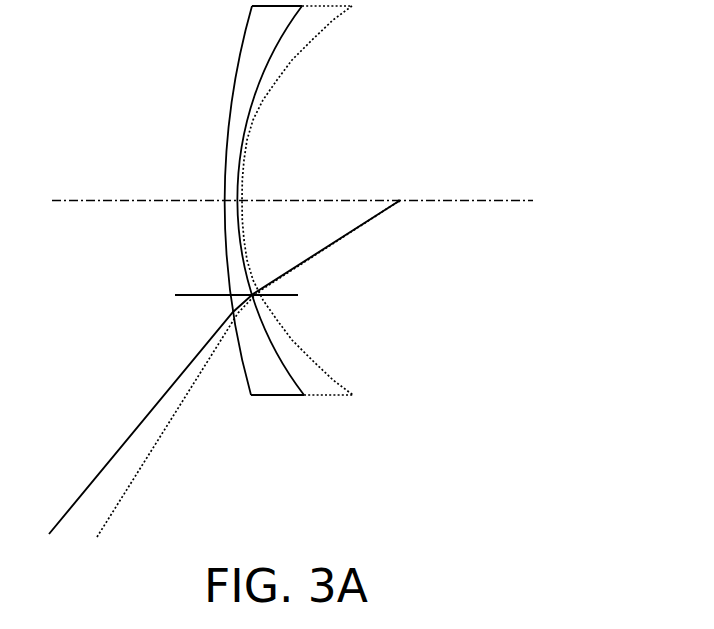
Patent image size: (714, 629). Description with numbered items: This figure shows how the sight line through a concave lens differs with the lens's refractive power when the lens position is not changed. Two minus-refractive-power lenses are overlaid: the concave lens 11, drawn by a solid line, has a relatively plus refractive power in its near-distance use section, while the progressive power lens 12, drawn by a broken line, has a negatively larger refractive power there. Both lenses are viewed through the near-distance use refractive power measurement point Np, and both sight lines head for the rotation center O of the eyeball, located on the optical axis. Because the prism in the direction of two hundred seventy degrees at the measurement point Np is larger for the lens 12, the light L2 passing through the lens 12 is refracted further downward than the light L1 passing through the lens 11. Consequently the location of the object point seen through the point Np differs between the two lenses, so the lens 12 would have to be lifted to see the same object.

The concave lens 11 is at (241, 50).
The progressive power lens 12 is at (318, 32).
The sight line L1 is at (224, 367).
The sight line L2 is at (248, 369).
The near-distance use refractive power measurement point Np is at (219, 292).
The rotation center of eyeball O is at (400, 187).